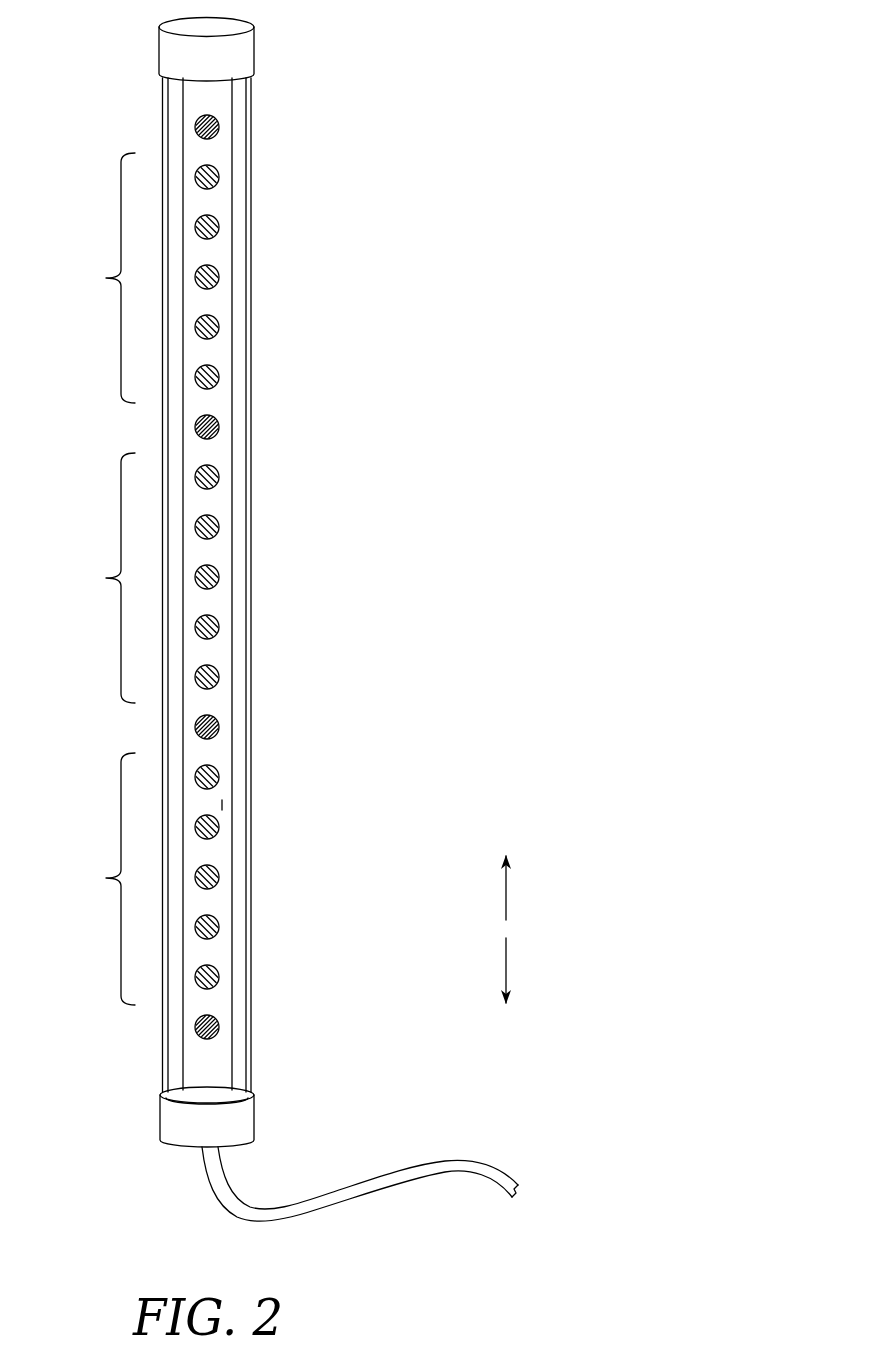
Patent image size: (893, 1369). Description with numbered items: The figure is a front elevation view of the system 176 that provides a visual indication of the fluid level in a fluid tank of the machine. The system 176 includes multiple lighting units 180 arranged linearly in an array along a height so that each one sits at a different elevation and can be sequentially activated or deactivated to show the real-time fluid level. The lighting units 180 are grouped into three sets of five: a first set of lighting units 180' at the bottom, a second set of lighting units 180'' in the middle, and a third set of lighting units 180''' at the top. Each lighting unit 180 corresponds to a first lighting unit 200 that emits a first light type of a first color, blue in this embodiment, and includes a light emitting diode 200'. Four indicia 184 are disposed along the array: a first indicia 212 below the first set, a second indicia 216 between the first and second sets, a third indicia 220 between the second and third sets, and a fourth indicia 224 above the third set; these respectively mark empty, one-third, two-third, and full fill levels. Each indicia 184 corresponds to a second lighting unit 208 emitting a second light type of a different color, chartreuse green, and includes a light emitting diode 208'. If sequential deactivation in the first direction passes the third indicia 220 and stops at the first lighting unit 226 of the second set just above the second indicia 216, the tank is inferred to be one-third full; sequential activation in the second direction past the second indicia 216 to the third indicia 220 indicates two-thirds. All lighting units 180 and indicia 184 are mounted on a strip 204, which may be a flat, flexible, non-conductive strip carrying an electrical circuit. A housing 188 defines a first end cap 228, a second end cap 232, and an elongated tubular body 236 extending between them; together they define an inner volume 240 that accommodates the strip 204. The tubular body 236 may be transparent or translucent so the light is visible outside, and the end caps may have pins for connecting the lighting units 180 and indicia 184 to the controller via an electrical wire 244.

The system 176 is at (487, 56).
The lighting units 180 is at (275, 909).
The first set of lighting units 180' is at (215, 879).
The second set of lighting units 180'' is at (186, 578).
The third set of lighting units 180''' is at (134, 278).
The indicia 184 is at (216, 116).
The housing 188 is at (254, 216).
The first lighting unit 200 is at (275, 927).
The light emitting diode 200' is at (207, 927).
The strip 204 is at (296, 805).
The second lighting unit 208 is at (286, 739).
The light emitting diode 208' is at (207, 726).
The first indicia 212 is at (219, 1022).
The second indicia 216 is at (219, 722).
The third indicia 220 is at (218, 423).
The fourth indicia 224 is at (217, 121).
The first lighting unit 226 is at (216, 668).
The first end cap 228 is at (254, 1115).
The second end cap 232 is at (254, 50).
The elongated tubular body 236 is at (252, 259).
The inner volume 240 is at (240, 293).
The electrical wire 244 is at (385, 1190).